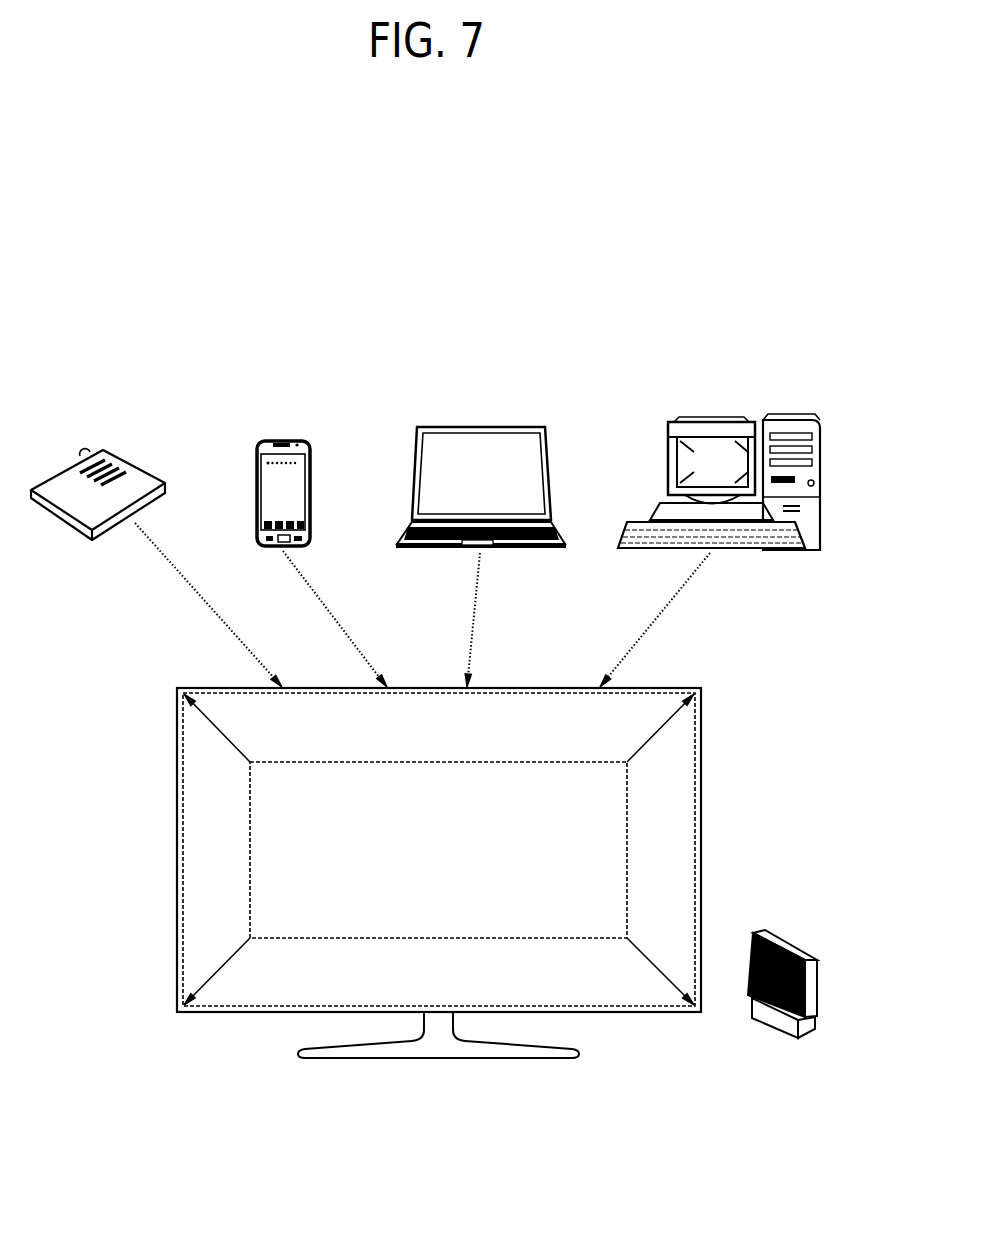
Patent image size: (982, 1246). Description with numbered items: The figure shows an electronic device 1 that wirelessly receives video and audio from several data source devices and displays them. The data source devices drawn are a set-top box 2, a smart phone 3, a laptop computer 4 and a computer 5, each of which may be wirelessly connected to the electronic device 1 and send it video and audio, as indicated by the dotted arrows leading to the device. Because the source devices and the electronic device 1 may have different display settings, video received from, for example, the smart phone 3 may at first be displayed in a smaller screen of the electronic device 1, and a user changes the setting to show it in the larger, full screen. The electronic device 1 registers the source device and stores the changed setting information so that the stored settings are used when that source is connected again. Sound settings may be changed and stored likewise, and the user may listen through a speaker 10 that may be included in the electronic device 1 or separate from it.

The electronic device 1 is at (702, 716).
The set-top box 2 is at (99, 450).
The smart phone 3 is at (283, 440).
The laptop computer 4 is at (478, 426).
The computer 5 is at (712, 418).
The speaker 10 is at (773, 1036).